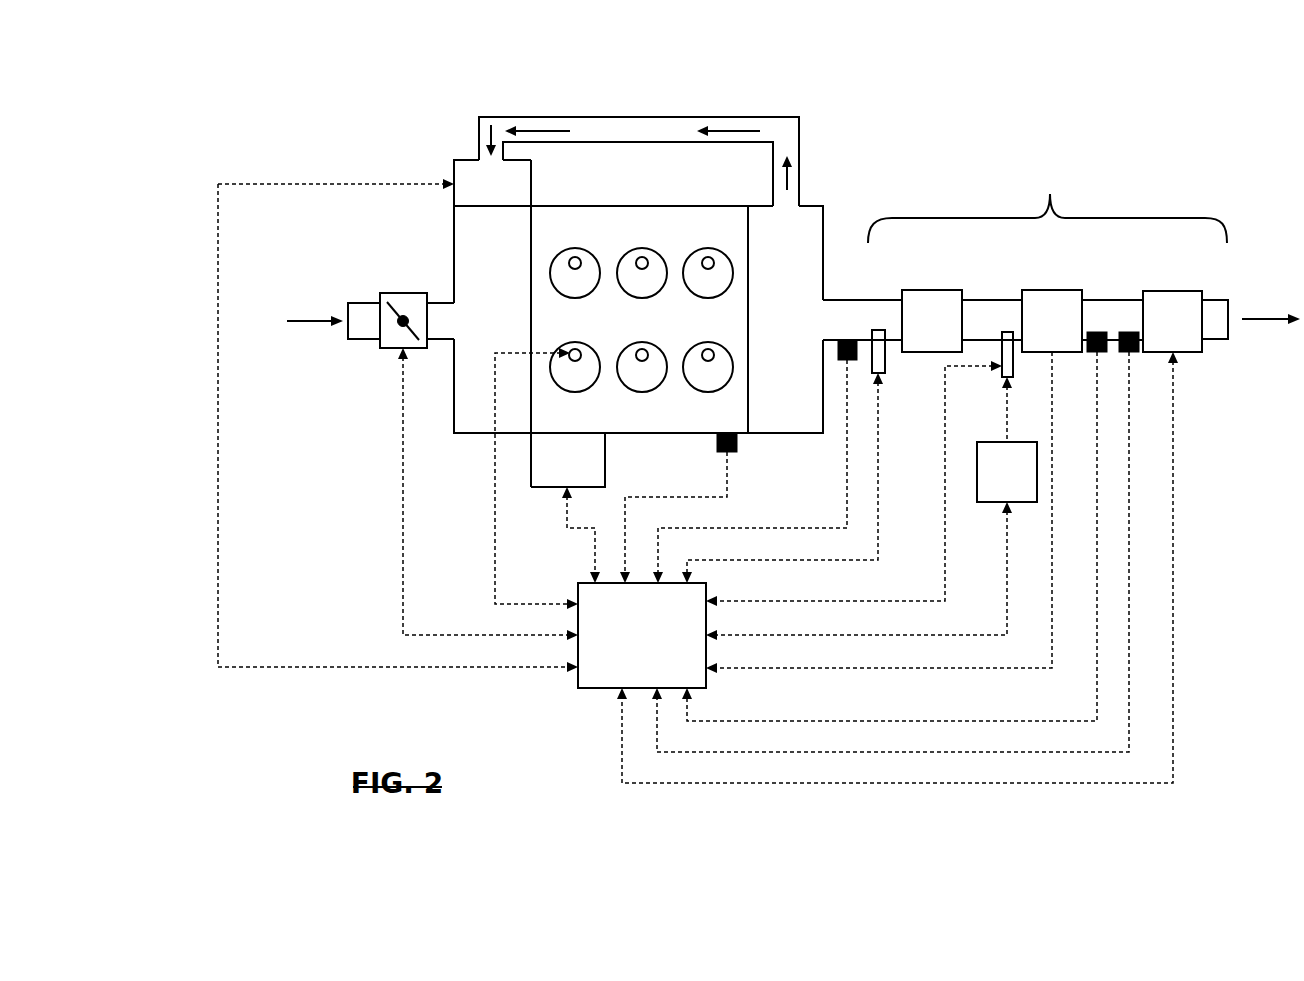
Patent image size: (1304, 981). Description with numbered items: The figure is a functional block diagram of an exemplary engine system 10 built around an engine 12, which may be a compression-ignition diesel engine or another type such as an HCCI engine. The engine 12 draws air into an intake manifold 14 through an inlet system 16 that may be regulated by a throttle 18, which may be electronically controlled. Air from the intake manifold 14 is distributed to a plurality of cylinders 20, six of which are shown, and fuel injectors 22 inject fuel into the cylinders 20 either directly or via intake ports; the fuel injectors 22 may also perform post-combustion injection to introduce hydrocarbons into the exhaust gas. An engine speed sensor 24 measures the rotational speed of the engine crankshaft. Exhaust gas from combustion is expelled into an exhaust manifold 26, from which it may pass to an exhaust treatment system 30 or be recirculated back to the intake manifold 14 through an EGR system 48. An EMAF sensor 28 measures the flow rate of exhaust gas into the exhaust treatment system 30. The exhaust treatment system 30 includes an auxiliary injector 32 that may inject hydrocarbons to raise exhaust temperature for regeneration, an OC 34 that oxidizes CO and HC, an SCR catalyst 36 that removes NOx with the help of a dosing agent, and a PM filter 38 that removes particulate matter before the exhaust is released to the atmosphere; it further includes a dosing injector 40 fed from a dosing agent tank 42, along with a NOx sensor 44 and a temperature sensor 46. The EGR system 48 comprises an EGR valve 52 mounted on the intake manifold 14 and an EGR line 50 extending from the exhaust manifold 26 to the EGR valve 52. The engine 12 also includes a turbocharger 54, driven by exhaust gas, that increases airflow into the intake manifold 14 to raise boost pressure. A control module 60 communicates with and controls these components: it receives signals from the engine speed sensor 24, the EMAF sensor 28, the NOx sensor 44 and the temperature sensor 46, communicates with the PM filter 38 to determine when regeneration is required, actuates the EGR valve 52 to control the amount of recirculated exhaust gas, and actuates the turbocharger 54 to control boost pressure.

The engine system 10 is at (396, 88).
The engine 12 is at (640, 206).
The intake manifold 14 is at (454, 232).
The inlet system 16 is at (362, 303).
The throttle 18 is at (404, 293).
The cylinders 20 is at (575, 298).
The fuel injectors 22 is at (642, 349).
The engine speed sensor 24 is at (737, 447).
The exhaust manifold 26 is at (823, 206).
The exhaust mass air flow (EMAF) sensor 28 is at (838, 352).
The exhaust treatment system 30 is at (1047, 206).
The auxiliary injector 32 is at (884, 373).
The OC 34 is at (935, 290).
The SCR catalyst 36 is at (1052, 290).
The PM filter 38 is at (1175, 291).
The dosing injector 40 is at (1005, 377).
The dosing agent (DA) tank 42 is at (993, 502).
The NOx sensor 44 is at (1096, 332).
The temperature sensor 46 is at (1129, 332).
The EGR system 48 is at (646, 93).
The EGR line 50 is at (748, 117).
The EGR valve 52 is at (531, 182).
The turbocharger 54 is at (605, 470).
The control module 60 is at (597, 688).